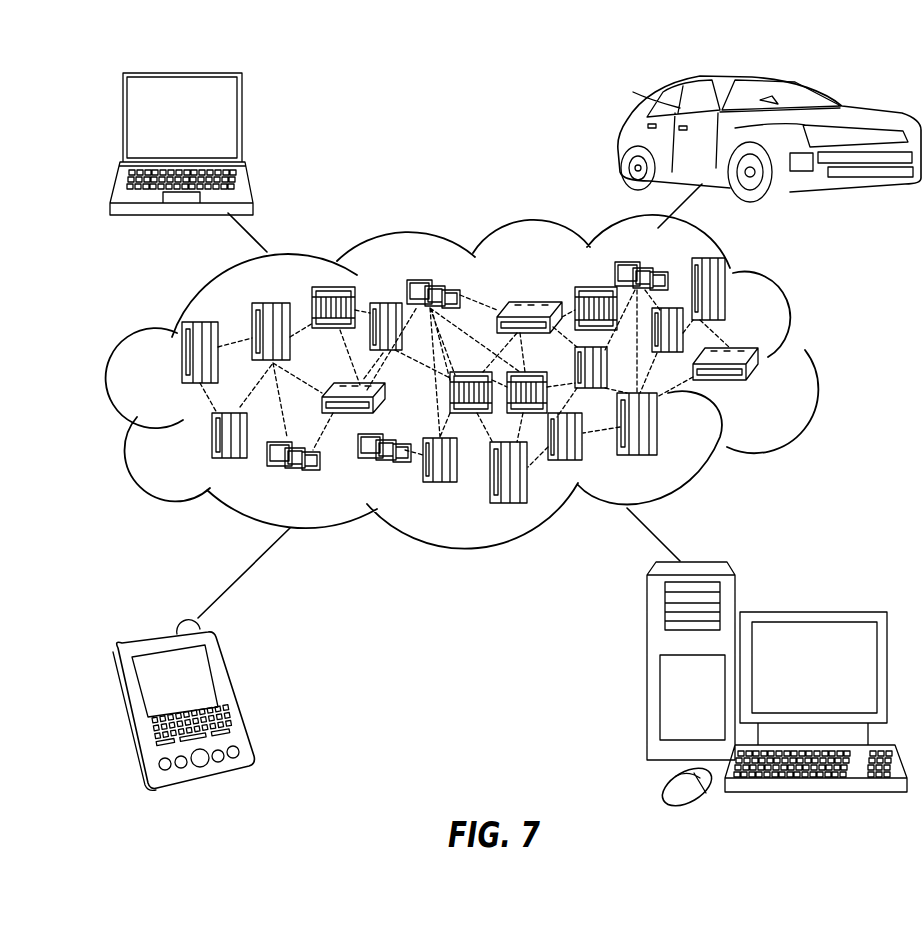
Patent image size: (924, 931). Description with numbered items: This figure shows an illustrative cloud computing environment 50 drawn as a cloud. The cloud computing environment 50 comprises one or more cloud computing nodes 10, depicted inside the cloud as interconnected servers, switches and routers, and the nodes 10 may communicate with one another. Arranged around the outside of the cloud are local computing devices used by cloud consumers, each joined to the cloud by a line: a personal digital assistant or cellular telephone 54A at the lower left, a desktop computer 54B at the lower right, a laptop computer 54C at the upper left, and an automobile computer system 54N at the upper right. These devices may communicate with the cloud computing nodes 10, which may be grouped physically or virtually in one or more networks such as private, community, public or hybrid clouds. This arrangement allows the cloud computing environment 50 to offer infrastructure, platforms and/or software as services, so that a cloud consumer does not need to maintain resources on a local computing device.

The cloud computing environment 50 is at (812, 360).
The cloud computing nodes 10 is at (760, 386).
The personal digital assistant or cellular telephone 54A is at (235, 695).
The desktop computer 54B is at (813, 612).
The laptop computer 54C is at (243, 125).
The automobile computer system 54N is at (620, 140).